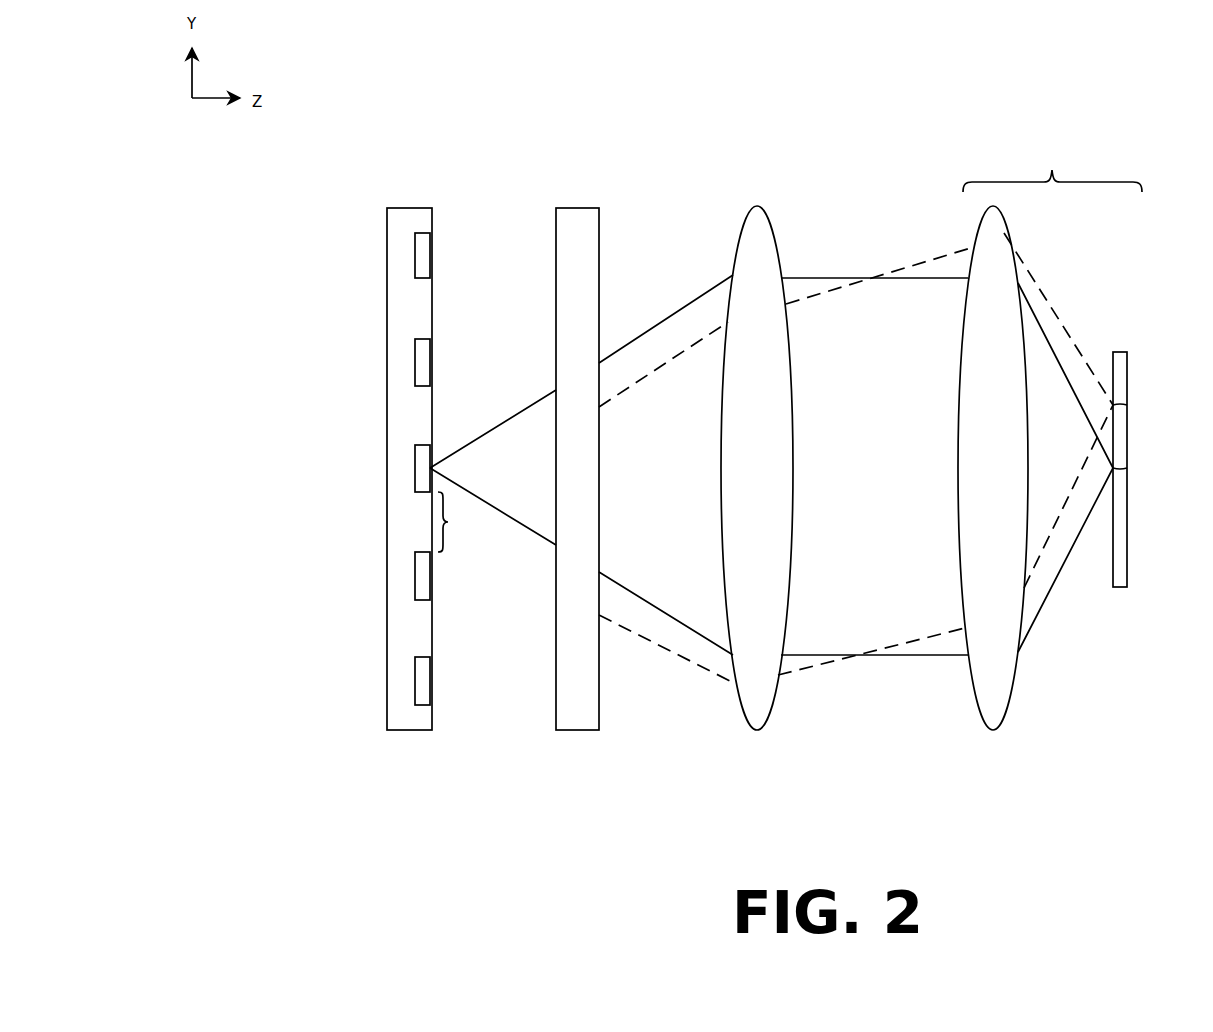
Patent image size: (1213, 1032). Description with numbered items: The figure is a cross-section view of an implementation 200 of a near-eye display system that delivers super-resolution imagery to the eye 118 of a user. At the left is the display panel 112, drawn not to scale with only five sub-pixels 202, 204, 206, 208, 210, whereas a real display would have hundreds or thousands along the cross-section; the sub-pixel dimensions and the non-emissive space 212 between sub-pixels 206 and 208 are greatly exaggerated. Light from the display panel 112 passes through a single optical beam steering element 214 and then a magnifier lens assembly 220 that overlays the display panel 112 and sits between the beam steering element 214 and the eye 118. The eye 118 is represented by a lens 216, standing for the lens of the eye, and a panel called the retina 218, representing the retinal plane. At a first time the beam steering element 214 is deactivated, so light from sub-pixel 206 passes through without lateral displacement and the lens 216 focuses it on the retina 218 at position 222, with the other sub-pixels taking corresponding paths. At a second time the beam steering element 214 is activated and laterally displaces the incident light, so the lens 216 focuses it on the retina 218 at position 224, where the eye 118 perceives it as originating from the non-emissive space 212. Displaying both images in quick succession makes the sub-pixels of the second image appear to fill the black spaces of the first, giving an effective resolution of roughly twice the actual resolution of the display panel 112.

The implementation 200 is at (853, 51).
The display panel 112 is at (412, 208).
The sub-pixel 202 is at (432, 257).
The sub-pixel 204 is at (432, 356).
The sub-pixel 206 is at (432, 470).
The sub-pixel 208 is at (432, 585).
The sub-pixel 210 is at (432, 683).
The non-emissive space 212 is at (460, 522).
The optical beam steering element 214 is at (592, 189).
The magnifier lens assembly 220 is at (760, 193).
The eye 118 is at (1052, 166).
The lens 216 is at (992, 484).
The retina 218 is at (1118, 500).
The position 222 is at (1120, 470).
The position 224 is at (1120, 405).